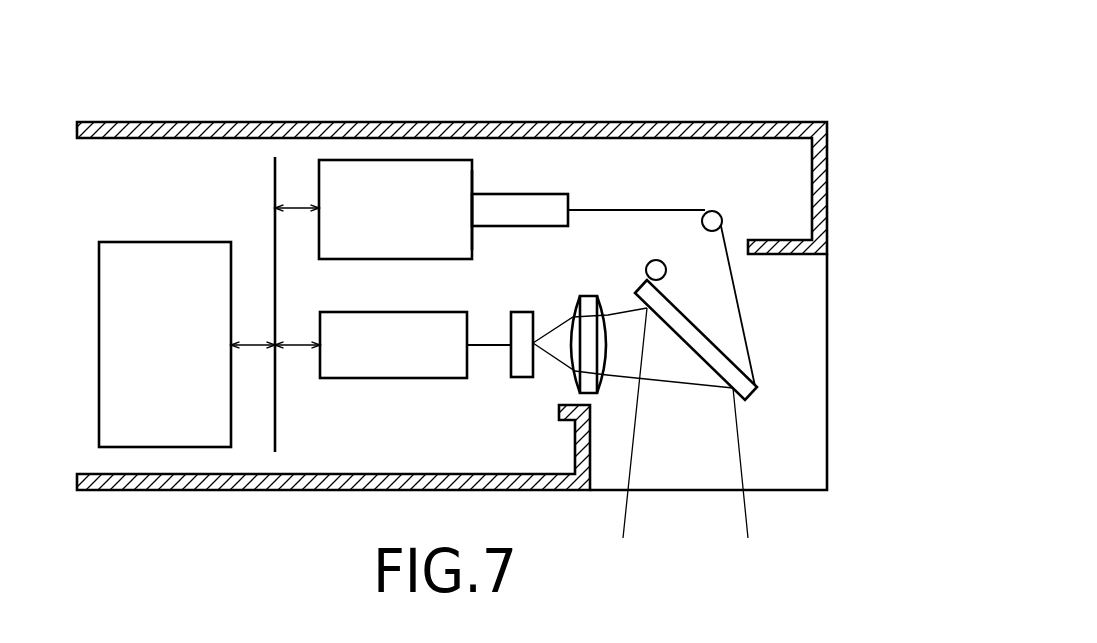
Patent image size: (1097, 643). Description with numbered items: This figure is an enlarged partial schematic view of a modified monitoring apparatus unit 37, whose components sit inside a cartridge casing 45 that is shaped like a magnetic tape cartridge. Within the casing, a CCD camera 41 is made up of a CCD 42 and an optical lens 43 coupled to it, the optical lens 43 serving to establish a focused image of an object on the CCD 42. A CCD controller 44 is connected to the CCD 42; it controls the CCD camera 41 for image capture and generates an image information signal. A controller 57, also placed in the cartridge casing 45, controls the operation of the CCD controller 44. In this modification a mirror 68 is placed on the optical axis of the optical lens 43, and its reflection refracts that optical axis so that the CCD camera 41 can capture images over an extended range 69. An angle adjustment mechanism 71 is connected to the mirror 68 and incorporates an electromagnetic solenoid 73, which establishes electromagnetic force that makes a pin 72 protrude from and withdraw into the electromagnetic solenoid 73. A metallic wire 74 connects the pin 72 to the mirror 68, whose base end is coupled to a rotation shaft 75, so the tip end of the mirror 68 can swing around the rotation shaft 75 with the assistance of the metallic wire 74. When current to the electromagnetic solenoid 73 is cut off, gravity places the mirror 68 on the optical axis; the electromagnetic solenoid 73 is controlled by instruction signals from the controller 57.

The monitoring apparatus unit 37 is at (708, 115).
The cartridge casing 45 is at (192, 123).
The controller 57 is at (200, 240).
The angle adjustment mechanism 71 is at (550, 157).
The pin 72 is at (570, 199).
The electromagnetic solenoid 73 is at (472, 181).
The metallic wire 74 is at (744, 330).
The rotation shaft 75 is at (666, 272).
The mirror 68 is at (718, 375).
The extended range 69 is at (743, 469).
The CCD camera 41 is at (550, 303).
The CCD 42 is at (517, 378).
The optical lens 43 is at (597, 293).
The CCD controller 44 is at (333, 312).